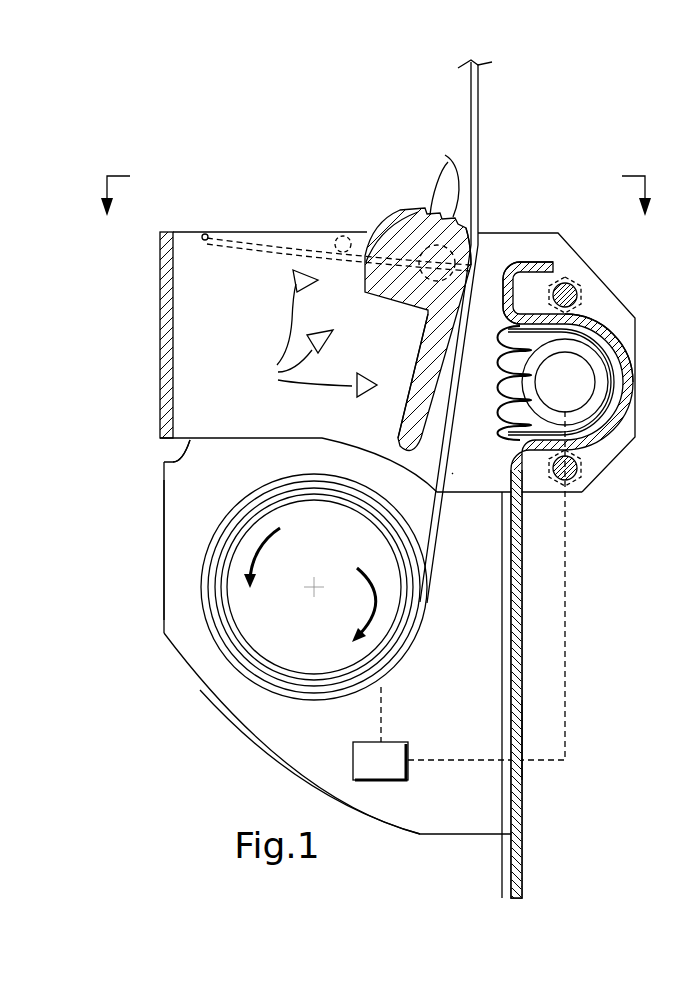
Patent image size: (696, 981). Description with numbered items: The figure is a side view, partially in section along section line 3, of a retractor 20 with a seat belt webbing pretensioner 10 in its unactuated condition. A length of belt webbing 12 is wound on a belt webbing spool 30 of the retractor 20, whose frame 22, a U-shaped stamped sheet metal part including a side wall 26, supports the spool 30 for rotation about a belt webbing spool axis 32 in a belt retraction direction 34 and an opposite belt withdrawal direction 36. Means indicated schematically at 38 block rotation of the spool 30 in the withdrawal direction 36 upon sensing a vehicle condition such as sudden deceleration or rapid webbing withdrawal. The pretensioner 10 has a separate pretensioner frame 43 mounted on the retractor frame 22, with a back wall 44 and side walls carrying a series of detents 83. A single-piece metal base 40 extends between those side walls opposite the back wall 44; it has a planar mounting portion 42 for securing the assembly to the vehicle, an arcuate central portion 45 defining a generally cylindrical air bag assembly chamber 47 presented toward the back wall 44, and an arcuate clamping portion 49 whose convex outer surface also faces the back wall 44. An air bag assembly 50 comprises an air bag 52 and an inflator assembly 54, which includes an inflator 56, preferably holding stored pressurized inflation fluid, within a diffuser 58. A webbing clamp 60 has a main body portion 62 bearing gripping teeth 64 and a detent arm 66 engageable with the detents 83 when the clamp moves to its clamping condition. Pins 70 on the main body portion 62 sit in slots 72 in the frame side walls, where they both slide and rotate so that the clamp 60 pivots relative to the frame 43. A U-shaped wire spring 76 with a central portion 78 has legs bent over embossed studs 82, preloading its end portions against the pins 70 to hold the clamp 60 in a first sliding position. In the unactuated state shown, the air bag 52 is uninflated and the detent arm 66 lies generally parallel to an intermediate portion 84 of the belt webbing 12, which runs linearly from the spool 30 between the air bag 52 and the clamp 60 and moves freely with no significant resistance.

The section line 3- 3 is at (376, 210).
The seat belt webbing pretensioner 10 is at (599, 550).
The belt webbing 12 is at (481, 112).
The retractor 20 is at (152, 681).
The frame 22 is at (262, 746).
The side wall 26 is at (189, 508).
The belt webbing spool 30 is at (212, 693).
The belt webbing spool axis 32 is at (316, 590).
The belt retraction direction 34 is at (361, 592).
The belt withdrawal direction 36 is at (280, 530).
The means for blocking rotation 38 is at (370, 760).
The base 40 is at (533, 690).
The mounting portion 42 is at (522, 736).
The pretensioner frame 43 is at (230, 445).
The back wall 44 is at (160, 352).
The central portion 45 is at (608, 440).
The air bag assembly chamber 47 is at (578, 436).
The clamping portion 49 is at (515, 245).
The air bag assembly 50 is at (600, 322).
The air bag 52 is at (503, 432).
The inflator assembly 54 is at (612, 364).
The inflator 56 is at (595, 397).
The diffuser 58 is at (608, 416).
The webbing clamp 60 is at (380, 214).
The main body portion 62 is at (413, 233).
The gripping teeth 64 is at (438, 174).
The detent arm 66 is at (398, 420).
The pins 70 is at (432, 280).
The slots 72 is at (465, 232).
The wire spring 76 is at (266, 245).
The central portion 78 is at (205, 233).
The embossed studs 82 is at (341, 238).
The detents 83 is at (310, 333).
The intermediate portion of the belt webbing 84 is at (453, 473).